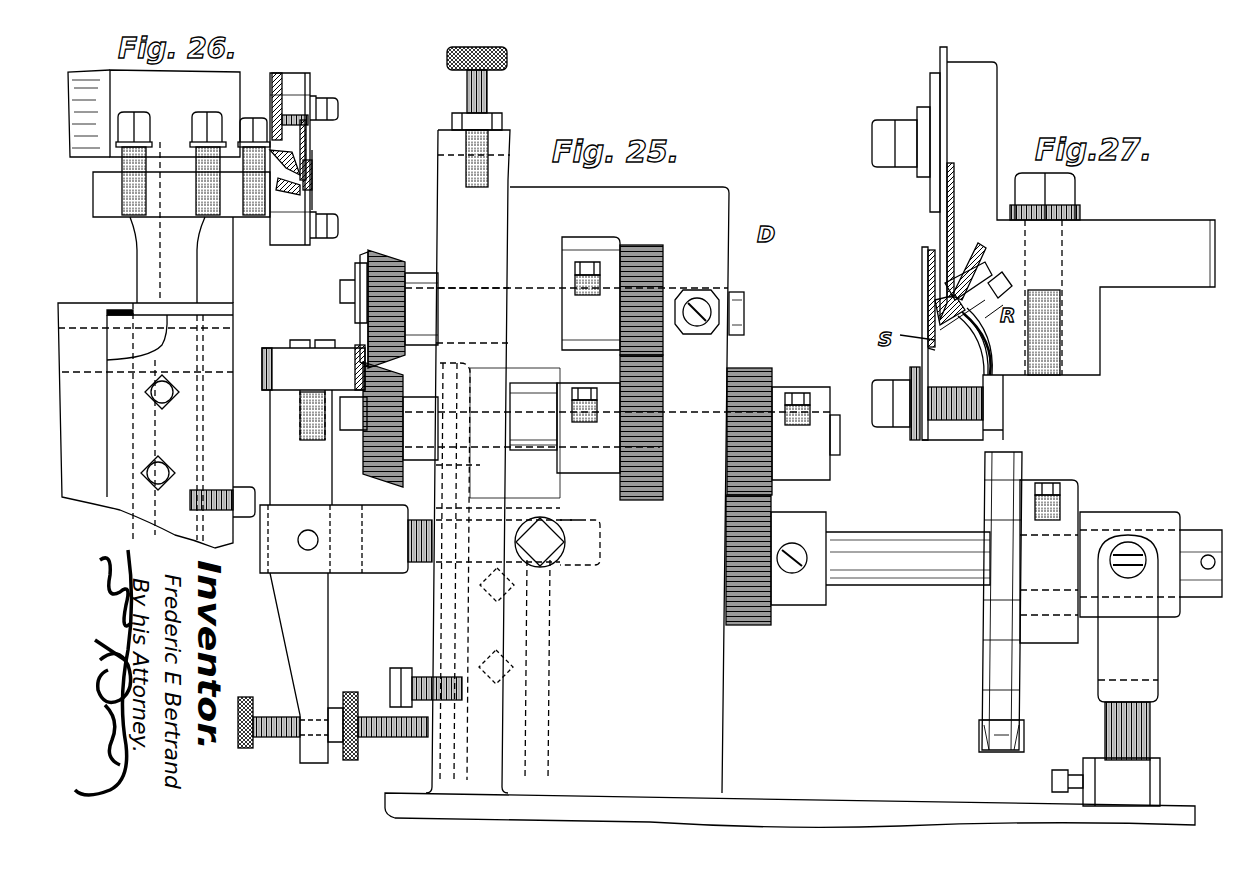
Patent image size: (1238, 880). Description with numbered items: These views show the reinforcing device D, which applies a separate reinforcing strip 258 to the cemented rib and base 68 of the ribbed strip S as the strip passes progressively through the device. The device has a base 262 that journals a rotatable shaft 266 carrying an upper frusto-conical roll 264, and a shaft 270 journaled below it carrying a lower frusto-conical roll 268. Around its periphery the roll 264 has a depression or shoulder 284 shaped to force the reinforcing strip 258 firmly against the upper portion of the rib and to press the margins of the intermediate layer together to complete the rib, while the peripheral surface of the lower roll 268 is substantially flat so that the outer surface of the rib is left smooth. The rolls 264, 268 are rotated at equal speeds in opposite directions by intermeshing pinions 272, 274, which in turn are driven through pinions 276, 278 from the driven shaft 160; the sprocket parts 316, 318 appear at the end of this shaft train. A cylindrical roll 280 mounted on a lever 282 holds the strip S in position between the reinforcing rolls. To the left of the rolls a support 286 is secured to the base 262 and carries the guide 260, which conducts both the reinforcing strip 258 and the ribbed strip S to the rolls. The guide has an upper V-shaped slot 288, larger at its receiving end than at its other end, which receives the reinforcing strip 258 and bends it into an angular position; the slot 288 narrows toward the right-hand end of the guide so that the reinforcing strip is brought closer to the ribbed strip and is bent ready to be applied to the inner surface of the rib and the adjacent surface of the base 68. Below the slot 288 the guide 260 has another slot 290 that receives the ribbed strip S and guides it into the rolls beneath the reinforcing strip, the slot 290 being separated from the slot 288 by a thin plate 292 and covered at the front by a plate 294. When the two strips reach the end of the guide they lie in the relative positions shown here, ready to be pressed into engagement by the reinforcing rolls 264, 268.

In FIG. 27, the base 68 is at (930, 262).
In FIG. 25, the driven shaft 160 is at (868, 530).
In FIG. 26, the reinforcing strip 258 is at (306, 140).
In FIG. 25, the reinforcing strip 258 is at (362, 340).
In FIG. 27, the reinforcing strip 258 is at (953, 190).
In FIG. 26, the guide 260 is at (296, 92).
In FIG. 27, the guide 260 is at (985, 80).
In FIG. 25, the base 262 is at (716, 708).
In FIG. 26, the frusto-conical roll 264 is at (278, 70).
In FIG. 25, the frusto-conical roll 264 is at (392, 258).
In FIG. 25, the rotatable shaft 266 is at (744, 295).
In FIG. 25, the lower frusto-conical roll 268 is at (380, 490).
In FIG. 25, the shaft 270 is at (520, 420).
In FIG. 25, the pinion 272 is at (650, 270).
In FIG. 25, the pinion 274 is at (635, 430).
In FIG. 25, the pinion 276 is at (750, 610).
In FIG. 25, the pinion 278 is at (750, 375).
In FIG. 25, the cylindrical roll 280 is at (272, 348).
In FIG. 25, the lever 282 is at (280, 634).
In FIG. 25, the depression or shoulder 284 is at (375, 250).
In FIG. 26, the support 286 is at (137, 270).
In FIG. 25, the support 286 is at (535, 476).
In FIG. 26, the V-shaped slot 288 is at (298, 160).
In FIG. 27, the V-shaped slot 288 is at (966, 285).
In FIG. 26, the slot 290 is at (287, 198).
In FIG. 27, the slot 290 is at (1005, 292).
In FIG. 26, the thin plate 292 is at (308, 72).
In FIG. 27, the thin plate 292 is at (940, 230).
In FIG. 26, the plate 294 is at (314, 178).
In FIG. 27, the plate 294 is at (922, 300).
In FIG. 25, the sprocket 316 is at (979, 735).
In FIG. 25, the sprocket teeth 318 is at (1000, 665).